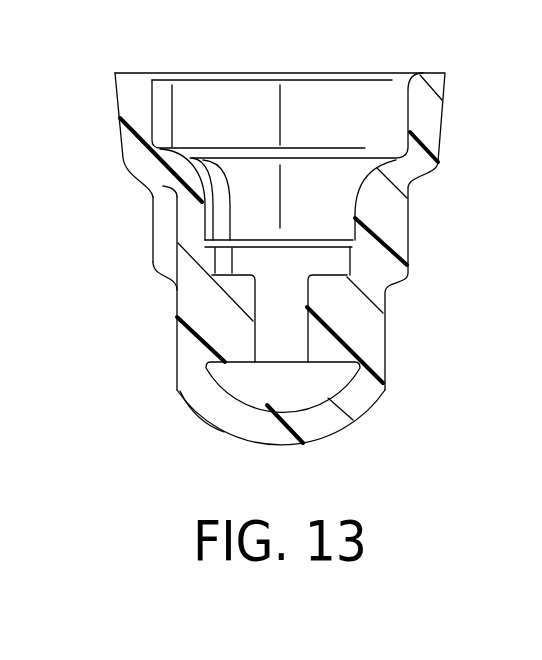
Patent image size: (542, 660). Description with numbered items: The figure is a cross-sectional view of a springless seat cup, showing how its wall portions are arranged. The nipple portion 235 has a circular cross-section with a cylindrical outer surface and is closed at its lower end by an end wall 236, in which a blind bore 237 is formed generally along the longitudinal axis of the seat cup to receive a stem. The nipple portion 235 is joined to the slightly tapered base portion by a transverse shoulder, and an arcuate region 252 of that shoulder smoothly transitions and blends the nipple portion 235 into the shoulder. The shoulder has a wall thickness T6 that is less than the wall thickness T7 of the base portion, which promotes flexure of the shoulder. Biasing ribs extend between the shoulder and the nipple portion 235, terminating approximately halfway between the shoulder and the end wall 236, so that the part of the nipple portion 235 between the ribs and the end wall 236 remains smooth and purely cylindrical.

The wall thickness of the base portion T7 is at (130, 97).
The wall thickness of the shoulder portion T6 is at (188, 172).
The blind bore 237 is at (288, 258).
The arcuate region 252 is at (175, 191).
The nipple portion 235 is at (177, 329).
The end wall 236 is at (263, 446).